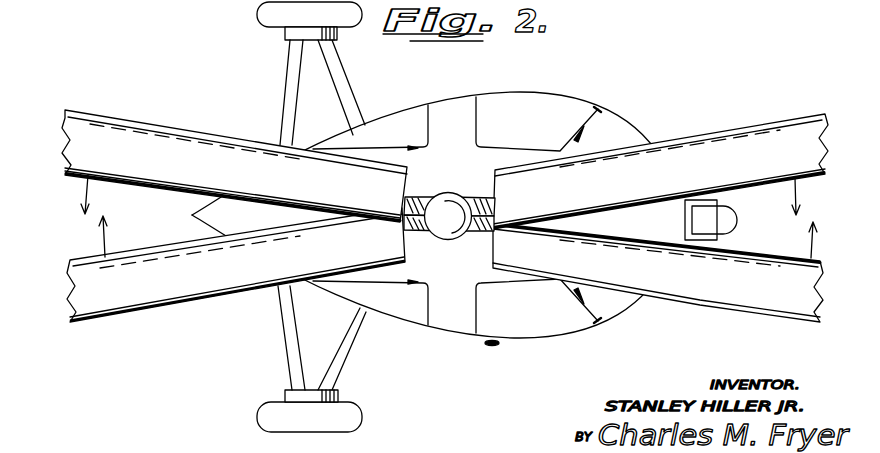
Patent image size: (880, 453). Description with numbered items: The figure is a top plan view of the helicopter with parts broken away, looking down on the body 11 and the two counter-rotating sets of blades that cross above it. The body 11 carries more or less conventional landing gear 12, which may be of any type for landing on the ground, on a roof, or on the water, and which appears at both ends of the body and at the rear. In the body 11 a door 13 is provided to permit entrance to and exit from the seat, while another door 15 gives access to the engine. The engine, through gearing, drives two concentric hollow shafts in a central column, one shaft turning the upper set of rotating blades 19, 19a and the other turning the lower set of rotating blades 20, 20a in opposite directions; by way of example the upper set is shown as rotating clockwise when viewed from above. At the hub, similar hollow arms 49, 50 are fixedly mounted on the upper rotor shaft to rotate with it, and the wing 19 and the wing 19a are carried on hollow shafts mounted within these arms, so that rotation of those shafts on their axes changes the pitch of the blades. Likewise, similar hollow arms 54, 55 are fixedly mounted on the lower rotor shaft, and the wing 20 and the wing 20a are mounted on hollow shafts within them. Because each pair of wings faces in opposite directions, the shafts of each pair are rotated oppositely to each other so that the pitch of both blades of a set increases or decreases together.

The body 11 is at (455, 102).
The landing gear 12 is at (265, 16).
The door 13 is at (529, 106).
The door 15 is at (406, 124).
The upper rotating blade 19 is at (616, 189).
The upper rotating blade 19a is at (266, 286).
The lower rotating blade 20 is at (206, 168).
The lower rotating blade 20a is at (694, 286).
The hollow arm 49 is at (415, 232).
The hollow arm 50 is at (480, 202).
The hollow arm 54 is at (416, 198).
The hollow arm 55 is at (480, 232).